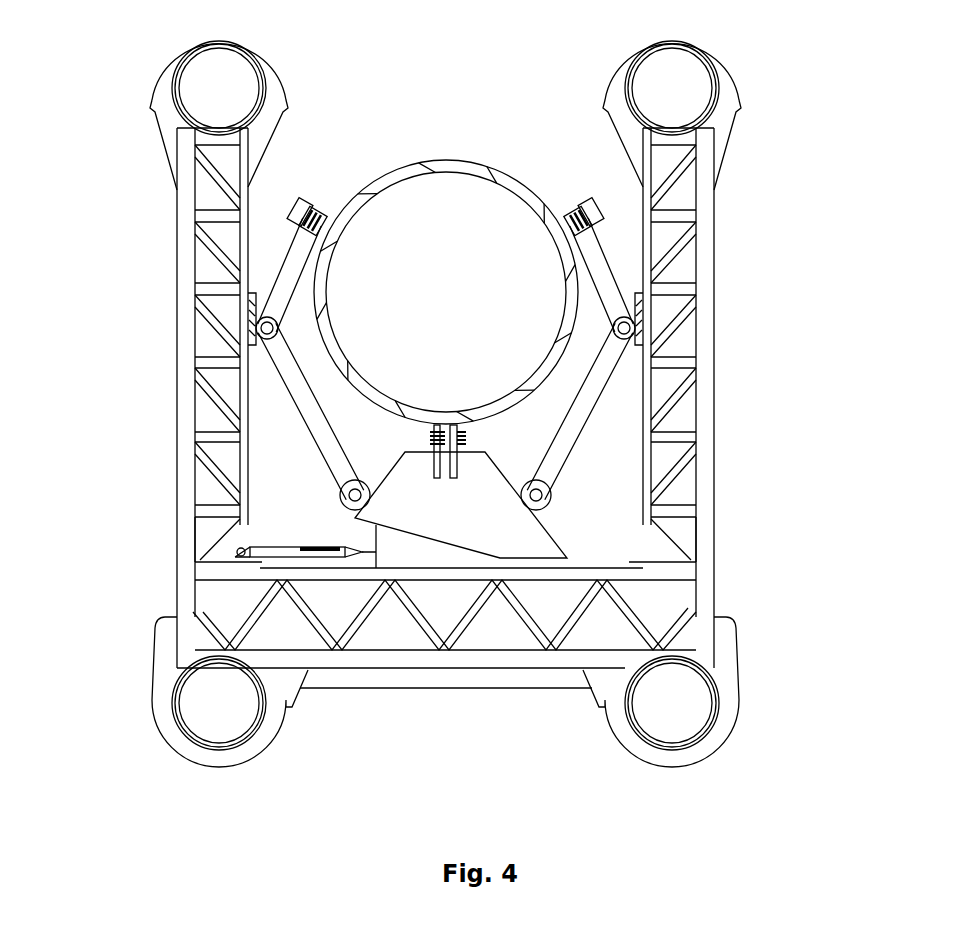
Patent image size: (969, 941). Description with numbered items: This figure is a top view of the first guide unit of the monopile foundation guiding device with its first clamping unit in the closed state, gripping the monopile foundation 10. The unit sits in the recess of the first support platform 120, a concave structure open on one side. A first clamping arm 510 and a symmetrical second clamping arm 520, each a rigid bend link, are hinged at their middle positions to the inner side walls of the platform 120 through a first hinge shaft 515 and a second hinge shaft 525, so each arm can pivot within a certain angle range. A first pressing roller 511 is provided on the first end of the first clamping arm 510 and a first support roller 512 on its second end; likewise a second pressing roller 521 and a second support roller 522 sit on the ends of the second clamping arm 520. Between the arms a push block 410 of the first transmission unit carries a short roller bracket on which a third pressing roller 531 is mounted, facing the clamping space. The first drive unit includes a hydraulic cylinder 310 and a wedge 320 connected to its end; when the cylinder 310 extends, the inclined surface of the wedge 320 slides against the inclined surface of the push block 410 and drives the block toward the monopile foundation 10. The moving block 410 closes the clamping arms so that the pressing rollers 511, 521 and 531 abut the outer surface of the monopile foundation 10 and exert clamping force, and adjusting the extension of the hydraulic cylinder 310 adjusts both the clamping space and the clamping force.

The monopile foundation 10 is at (442, 162).
The first support platform 120 is at (705, 346).
The hydraulic cylinder 310 is at (325, 552).
The wedge 320 is at (410, 548).
The push block 410 is at (505, 530).
The first clamping arm 510 is at (272, 276).
The first pressing roller 511 is at (313, 215).
The first support roller 512 is at (345, 496).
The first hinge shaft 515 is at (262, 328).
The second clamping arm 520 is at (618, 274).
The second pressing roller 521 is at (572, 213).
The second support roller 522 is at (548, 497).
The second hinge shaft 525 is at (640, 323).
The third pressing roller 531 is at (455, 432).